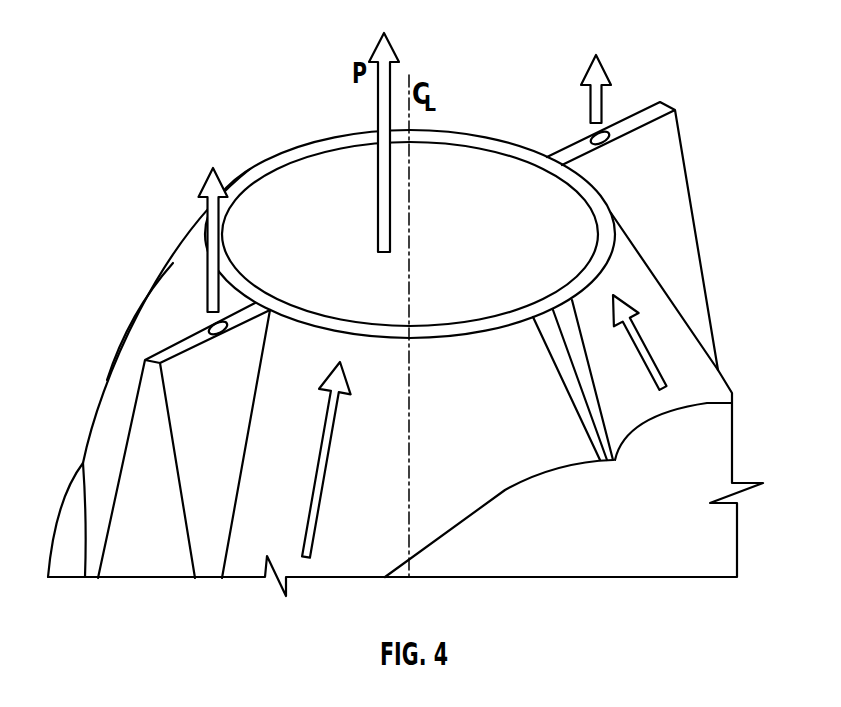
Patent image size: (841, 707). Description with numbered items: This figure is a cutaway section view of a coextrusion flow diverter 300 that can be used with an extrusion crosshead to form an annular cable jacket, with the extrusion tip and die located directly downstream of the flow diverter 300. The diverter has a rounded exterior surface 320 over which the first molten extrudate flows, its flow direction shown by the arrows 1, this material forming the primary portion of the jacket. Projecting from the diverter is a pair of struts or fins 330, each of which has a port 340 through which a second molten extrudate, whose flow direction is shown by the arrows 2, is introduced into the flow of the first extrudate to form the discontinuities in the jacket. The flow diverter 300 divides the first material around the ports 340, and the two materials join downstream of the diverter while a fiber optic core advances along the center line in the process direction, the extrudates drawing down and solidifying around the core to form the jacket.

The coextrusion flow diverter 300 is at (389, 335).
The exterior surface 320 is at (181, 268).
The struts or fins 330 is at (148, 425).
The port 340 is at (207, 333).
The arrows indicating flow direction of first molten extrudate 1 is at (484, 426).
The arrows indicating flow direction of second molten extrudate 2 is at (402, 183).